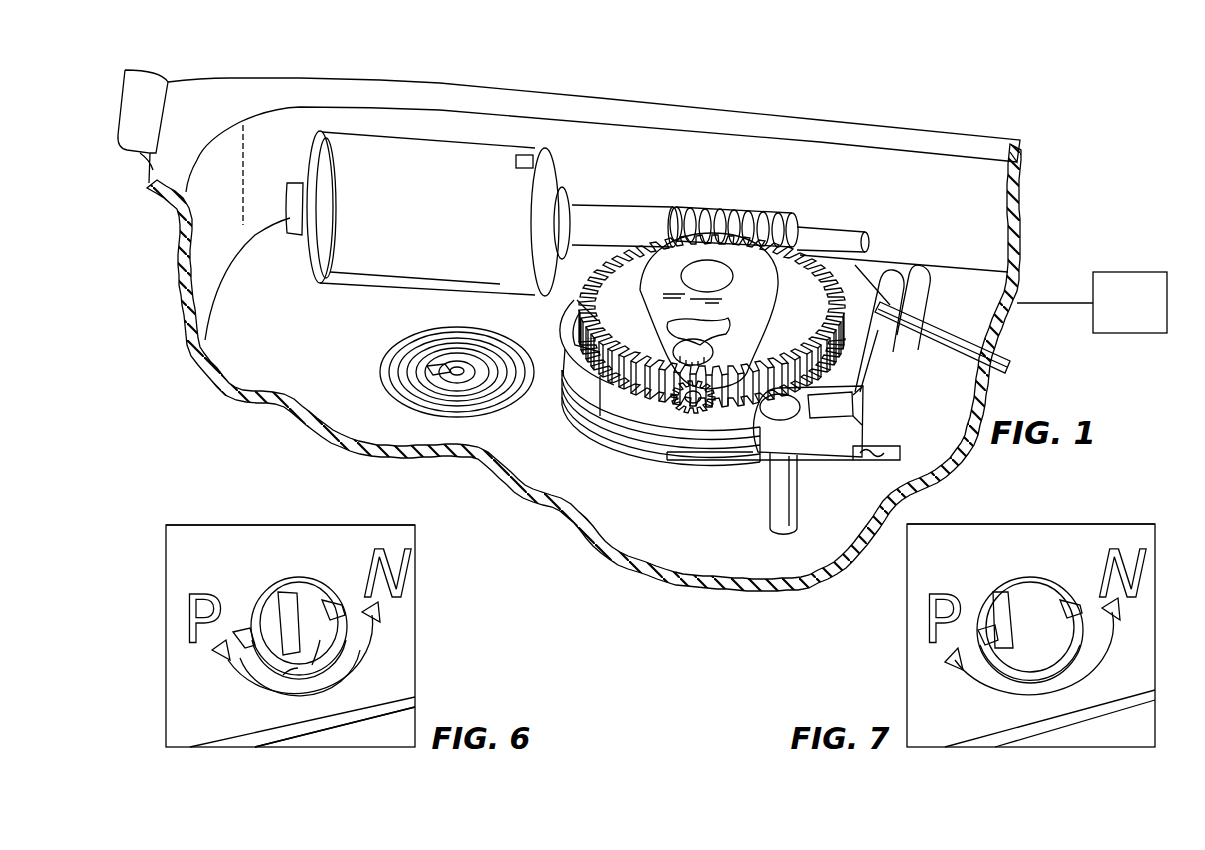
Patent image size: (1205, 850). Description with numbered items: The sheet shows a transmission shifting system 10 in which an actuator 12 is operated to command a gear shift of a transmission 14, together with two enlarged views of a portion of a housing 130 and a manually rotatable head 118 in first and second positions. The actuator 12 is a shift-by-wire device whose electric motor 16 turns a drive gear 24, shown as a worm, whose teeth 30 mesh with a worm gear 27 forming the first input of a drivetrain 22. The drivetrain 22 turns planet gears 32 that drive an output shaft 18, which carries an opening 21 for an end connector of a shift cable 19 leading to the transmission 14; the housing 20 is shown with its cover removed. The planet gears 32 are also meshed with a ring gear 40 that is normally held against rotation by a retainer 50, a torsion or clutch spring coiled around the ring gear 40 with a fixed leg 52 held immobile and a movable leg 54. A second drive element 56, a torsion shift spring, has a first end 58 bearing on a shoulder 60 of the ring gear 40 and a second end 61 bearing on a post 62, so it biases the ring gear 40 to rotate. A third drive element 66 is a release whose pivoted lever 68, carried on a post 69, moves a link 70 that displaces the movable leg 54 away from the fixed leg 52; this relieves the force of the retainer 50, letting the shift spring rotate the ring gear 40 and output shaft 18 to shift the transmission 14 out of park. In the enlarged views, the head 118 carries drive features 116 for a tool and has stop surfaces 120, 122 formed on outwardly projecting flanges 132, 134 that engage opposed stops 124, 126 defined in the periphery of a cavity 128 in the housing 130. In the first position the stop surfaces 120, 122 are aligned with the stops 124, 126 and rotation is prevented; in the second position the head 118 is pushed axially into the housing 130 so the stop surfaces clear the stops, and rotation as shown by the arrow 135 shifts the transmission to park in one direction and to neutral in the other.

In FIG. 1, the transmission shifting system 10 is at (1067, 135).
In FIG. 1, the actuator 12 is at (822, 102).
In FIG. 1, the transmission 14 is at (1131, 272).
In FIG. 1, the electric motor 16 is at (400, 155).
In FIG. 1, the output shaft 18 is at (763, 279).
In FIG. 1, the shift cable 19 is at (1045, 300).
In FIG. 1, the housing 20 is at (963, 143).
In FIG. 1, the opening 21 is at (692, 333).
In FIG. 1, the drivetrain 22 is at (868, 265).
In FIG. 1, the drive gear 24 is at (682, 196).
In FIG. 1, the worm gear 27 is at (776, 304).
In FIG. 1, the teeth 30 is at (711, 208).
In FIG. 1, the planet gears 32 is at (705, 482).
In FIG. 1, the ring gear 40 is at (640, 418).
In FIG. 1, the retainer 50 is at (668, 472).
In FIG. 1, the fixed leg 52 is at (886, 447).
In FIG. 1, the movable leg 54 is at (963, 346).
In FIG. 1, the second drive element 56 is at (370, 373).
In FIG. 1, the first end 58 is at (548, 360).
In FIG. 1, the shoulder 60 is at (575, 345).
In FIG. 1, the second end 61 is at (432, 368).
In FIG. 1, the post 62 is at (458, 381).
In FIG. 1, the third drive element 66 is at (819, 505).
In FIG. 1, the pivoted lever 68 is at (824, 446).
In FIG. 1, the post 69 is at (777, 504).
In FIG. 1, the link 70 is at (860, 355).
In FIG. 6, the drive features 116 is at (288, 603).
In FIG. 6, the head 118 is at (312, 665).
In FIG. 7, the head 118 is at (1025, 600).
In FIG. 6, the stop surface 120 is at (258, 652).
In FIG. 6, the stop surface 122 is at (312, 645).
In FIG. 6, the stop 124 is at (250, 628).
In FIG. 7, the stop 124 is at (988, 628).
In FIG. 6, the stop 126 is at (341, 620).
In FIG. 7, the stop 126 is at (1072, 606).
In FIG. 6, the cavity 128 is at (288, 675).
In FIG. 7, the cavity 128 is at (1055, 652).
In FIG. 6, the housing 130 is at (400, 596).
In FIG. 7, the housing 130 is at (1135, 652).
In FIG. 6, the flange 132 is at (222, 672).
In FIG. 6, the flange 134 is at (307, 588).
In FIG. 6, the arrow 135 is at (378, 700).
In FIG. 7, the arrow 135 is at (978, 695).